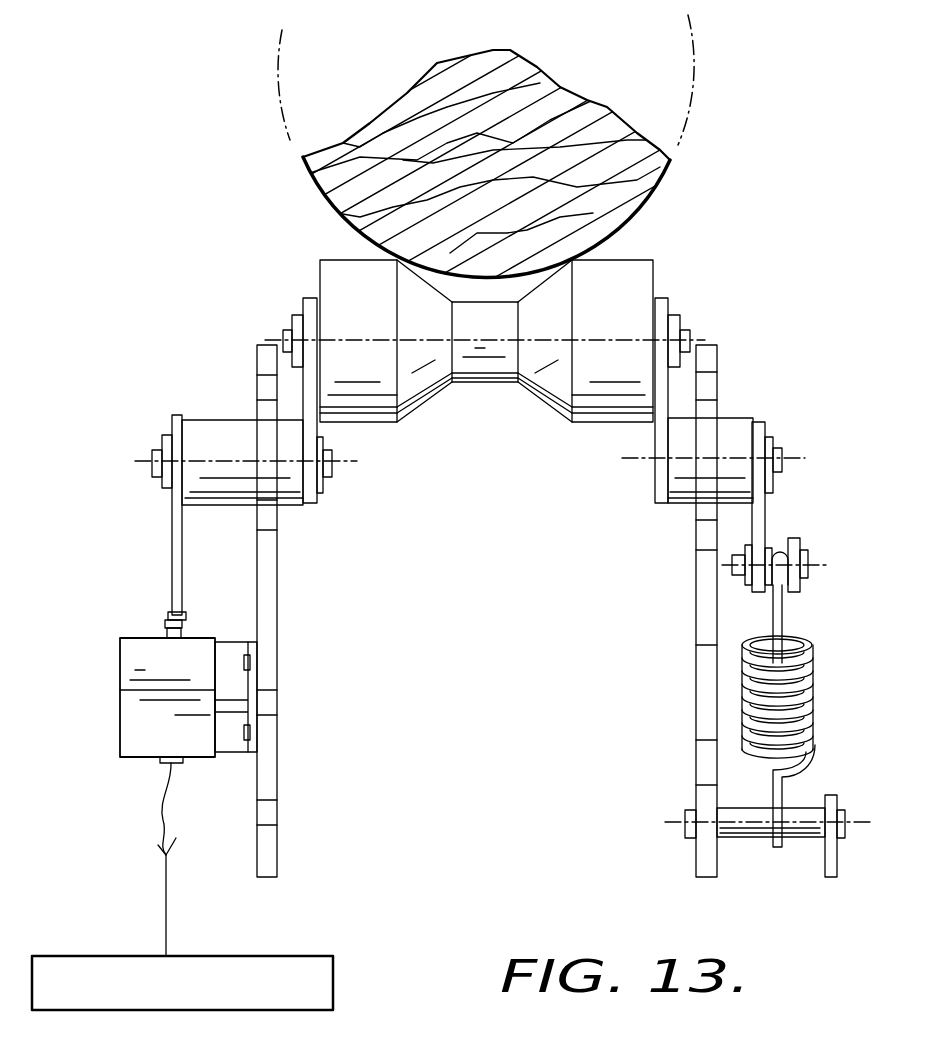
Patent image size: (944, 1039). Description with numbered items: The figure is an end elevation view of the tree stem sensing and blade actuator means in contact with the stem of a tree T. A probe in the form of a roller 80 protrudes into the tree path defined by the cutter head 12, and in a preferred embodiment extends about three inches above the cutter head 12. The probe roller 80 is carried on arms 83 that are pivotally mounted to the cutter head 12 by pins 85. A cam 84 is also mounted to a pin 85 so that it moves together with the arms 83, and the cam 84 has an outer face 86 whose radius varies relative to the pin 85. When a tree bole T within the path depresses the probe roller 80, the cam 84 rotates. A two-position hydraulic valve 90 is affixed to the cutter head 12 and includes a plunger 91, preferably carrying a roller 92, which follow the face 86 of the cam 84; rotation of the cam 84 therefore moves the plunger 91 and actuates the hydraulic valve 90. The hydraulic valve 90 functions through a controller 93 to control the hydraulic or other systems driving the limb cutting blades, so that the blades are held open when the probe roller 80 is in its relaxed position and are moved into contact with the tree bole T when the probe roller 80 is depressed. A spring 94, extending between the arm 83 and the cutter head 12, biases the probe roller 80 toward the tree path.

The tree T is at (350, 205).
The probe roller 80 is at (632, 280).
The arms 83 is at (315, 427).
The pins 85 is at (207, 452).
The cam 84 is at (172, 523).
The outer face 86 is at (180, 612).
The roller 92 is at (185, 628).
The plunger 91 is at (165, 632).
The two-position hydraulic valve 90 is at (140, 730).
The cutter head 12 is at (270, 795).
The spring 94 is at (813, 670).
The controller 93 is at (98, 955).